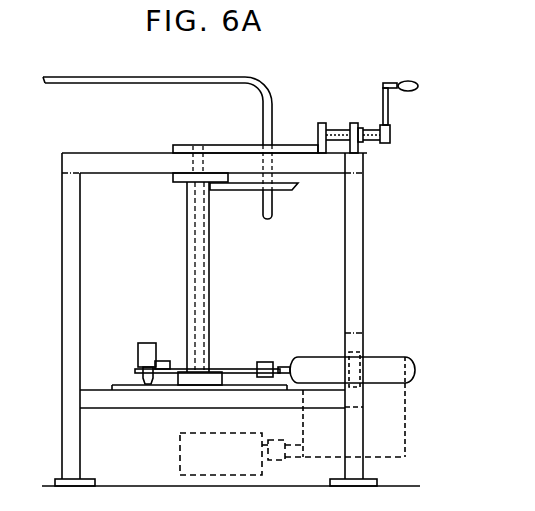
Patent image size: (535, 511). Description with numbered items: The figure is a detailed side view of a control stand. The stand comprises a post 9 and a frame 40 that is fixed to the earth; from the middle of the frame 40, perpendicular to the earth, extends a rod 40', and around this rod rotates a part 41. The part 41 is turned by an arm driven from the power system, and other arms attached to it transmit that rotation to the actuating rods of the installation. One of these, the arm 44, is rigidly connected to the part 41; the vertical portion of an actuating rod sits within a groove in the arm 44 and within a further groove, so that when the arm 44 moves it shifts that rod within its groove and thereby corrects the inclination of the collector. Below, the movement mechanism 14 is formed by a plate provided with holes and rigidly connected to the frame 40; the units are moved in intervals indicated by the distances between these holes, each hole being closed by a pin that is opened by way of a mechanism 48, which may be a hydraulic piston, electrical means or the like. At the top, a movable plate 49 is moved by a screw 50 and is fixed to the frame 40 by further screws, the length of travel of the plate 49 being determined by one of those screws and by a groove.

The post 9 is at (180, 460).
The movement mechanism 14 is at (136, 369).
The frame 40 is at (333, 461).
The rod 40' is at (160, 276).
The part 41 is at (209, 257).
The arm 44 is at (291, 188).
The mechanism 48 is at (147, 343).
The movable plate 49 is at (287, 150).
The screw 50 is at (337, 128).